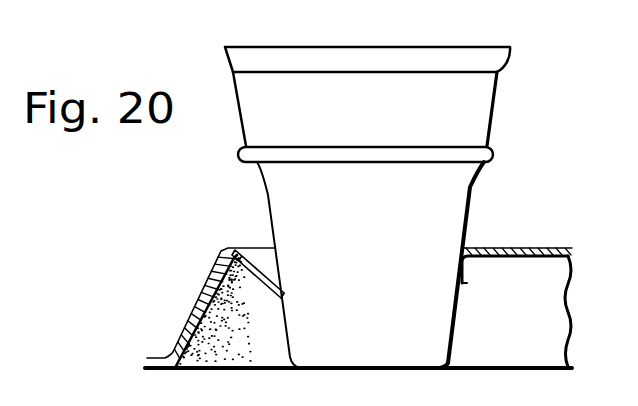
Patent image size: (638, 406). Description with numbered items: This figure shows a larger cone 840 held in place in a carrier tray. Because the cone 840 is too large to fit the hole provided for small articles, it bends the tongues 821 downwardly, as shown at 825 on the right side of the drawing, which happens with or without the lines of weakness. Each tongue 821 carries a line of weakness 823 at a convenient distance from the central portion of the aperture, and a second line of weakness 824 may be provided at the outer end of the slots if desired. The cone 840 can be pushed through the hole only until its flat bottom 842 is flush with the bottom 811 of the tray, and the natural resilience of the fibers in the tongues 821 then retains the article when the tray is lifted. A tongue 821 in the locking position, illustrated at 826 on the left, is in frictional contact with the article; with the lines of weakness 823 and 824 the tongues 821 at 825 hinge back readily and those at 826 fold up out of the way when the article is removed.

The larger cone 840 is at (463, 183).
The line of weakness 823 is at (473, 243).
The flat bottom 842 is at (370, 367).
The bottom of the tray 811 is at (502, 371).
The second line of weakness 824 is at (238, 248).
The tongue 821 is at (267, 278).
The downwardly bent tongue position 825 is at (467, 272).
The tongue locking position 826 is at (282, 298).